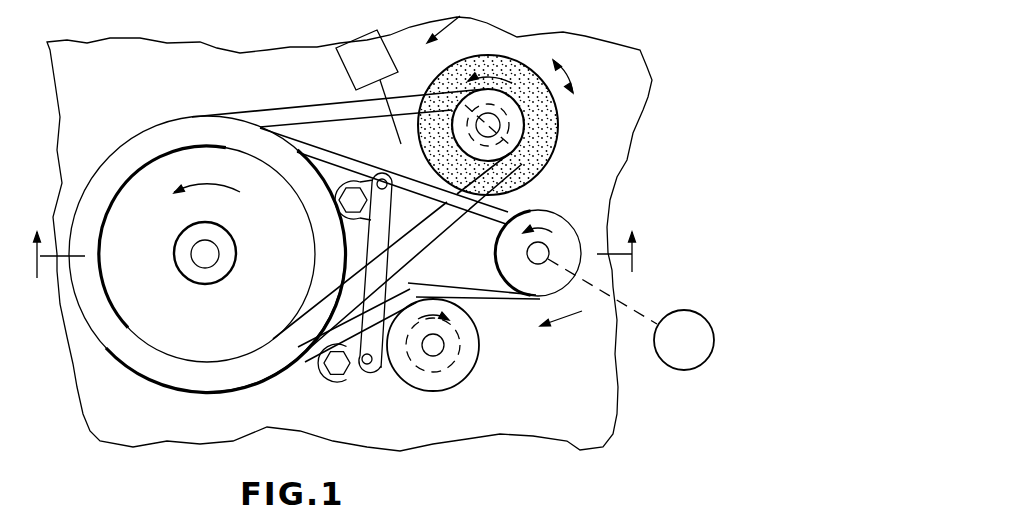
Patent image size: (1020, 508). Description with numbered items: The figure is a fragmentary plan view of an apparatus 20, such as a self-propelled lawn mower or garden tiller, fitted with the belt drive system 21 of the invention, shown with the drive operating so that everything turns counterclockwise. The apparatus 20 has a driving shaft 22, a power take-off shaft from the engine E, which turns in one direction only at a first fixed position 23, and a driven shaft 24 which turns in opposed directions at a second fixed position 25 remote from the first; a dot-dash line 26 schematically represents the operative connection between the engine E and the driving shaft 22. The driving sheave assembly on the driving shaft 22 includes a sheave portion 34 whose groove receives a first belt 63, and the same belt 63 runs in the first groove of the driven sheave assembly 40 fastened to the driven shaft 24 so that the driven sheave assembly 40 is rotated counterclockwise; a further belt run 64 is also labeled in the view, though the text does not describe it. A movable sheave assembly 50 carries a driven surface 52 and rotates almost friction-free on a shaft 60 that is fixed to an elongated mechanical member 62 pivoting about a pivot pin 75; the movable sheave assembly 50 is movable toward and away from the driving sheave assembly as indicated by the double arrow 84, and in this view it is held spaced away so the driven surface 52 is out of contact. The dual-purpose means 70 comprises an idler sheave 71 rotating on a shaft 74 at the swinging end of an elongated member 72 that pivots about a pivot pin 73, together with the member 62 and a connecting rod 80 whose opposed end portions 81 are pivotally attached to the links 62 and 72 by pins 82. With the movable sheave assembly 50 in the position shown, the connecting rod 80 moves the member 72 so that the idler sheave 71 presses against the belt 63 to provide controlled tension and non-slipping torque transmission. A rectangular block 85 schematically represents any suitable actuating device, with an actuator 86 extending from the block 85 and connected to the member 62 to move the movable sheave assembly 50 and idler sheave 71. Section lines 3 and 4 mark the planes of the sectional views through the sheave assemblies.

The section line 3- 3 is at (332, 255).
The section line 4- 4 is at (504, 176).
The apparatus 20 is at (645, 60).
The belt drive system 21 is at (178, 92).
The driving shaft 22 is at (553, 232).
The first fixed position 23 is at (552, 252).
The driven shaft 24 is at (200, 265).
The second fixed position 25 is at (184, 243).
The dot-dash line 26 is at (640, 313).
The sheave portion 34 is at (553, 214).
The driven sheave assembly 40 is at (98, 355).
The movable sheave assembly 50 is at (516, 54).
The driven surface 52 is at (558, 122).
The shaft 60 is at (481, 117).
The elongated mechanical member 62 is at (400, 146).
The first belt 63 is at (520, 192).
The drive belt 64 is at (272, 108).
The dual-purpose means 70 is at (445, 402).
The idler sheave 71 is at (476, 368).
The elongated member 72 is at (382, 370).
The pivot pin 73 is at (298, 366).
The shaft 74 is at (445, 345).
The pivot pin 75 is at (345, 201).
The connecting rod 80 is at (387, 284).
The end portions 81 is at (380, 176).
The pins 82 is at (430, 216).
The double arrow 84 is at (580, 60).
The rectangular block 85 is at (358, 28).
The actuator 86 is at (372, 112).